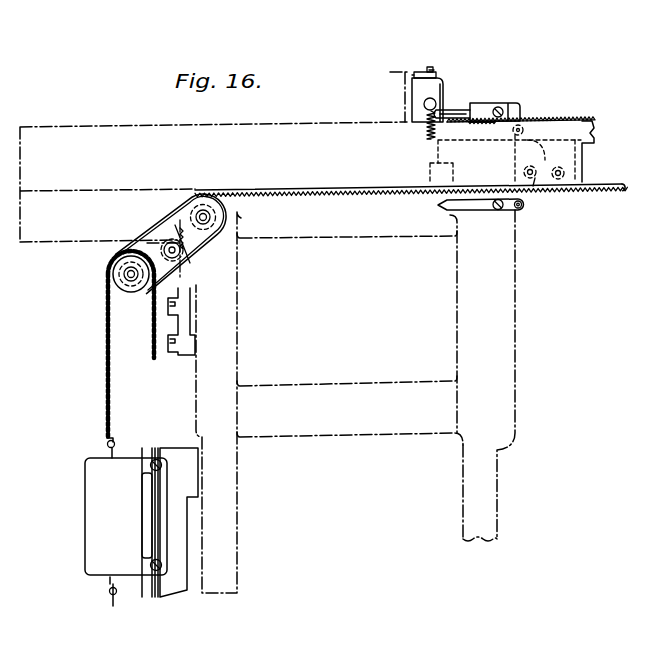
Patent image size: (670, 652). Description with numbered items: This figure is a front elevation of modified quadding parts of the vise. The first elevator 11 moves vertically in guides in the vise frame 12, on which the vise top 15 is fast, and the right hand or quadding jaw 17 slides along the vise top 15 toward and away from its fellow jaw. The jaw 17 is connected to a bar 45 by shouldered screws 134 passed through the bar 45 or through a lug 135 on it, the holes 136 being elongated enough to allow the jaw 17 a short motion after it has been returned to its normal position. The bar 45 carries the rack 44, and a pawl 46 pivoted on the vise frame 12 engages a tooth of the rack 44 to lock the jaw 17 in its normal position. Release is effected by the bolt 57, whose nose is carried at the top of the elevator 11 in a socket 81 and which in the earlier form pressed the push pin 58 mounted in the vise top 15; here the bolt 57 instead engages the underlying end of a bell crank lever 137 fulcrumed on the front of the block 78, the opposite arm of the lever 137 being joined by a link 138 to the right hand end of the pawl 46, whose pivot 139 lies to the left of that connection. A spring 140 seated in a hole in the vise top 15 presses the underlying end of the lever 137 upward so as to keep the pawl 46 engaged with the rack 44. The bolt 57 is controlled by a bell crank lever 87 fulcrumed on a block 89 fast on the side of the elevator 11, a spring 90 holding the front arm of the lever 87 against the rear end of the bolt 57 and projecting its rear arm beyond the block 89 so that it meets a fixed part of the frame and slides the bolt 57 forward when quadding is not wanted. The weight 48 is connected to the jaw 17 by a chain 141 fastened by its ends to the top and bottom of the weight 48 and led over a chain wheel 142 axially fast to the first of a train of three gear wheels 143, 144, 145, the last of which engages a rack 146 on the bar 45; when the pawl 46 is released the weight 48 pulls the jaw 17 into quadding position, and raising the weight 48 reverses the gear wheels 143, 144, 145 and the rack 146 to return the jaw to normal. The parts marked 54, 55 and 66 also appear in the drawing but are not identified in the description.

The first elevator 11 is at (403, 80).
The vise frame 12 is at (338, 379).
The vise top 15 is at (137, 127).
The right hand vise jaw 17 is at (430, 157).
The rack 44 is at (595, 193).
The bar 45 is at (612, 188).
The pawl 46 is at (470, 212).
The weight 48 is at (126, 516).
The screw 54 is at (157, 459).
The bracket plate 55 is at (170, 522).
The bolt 57 is at (432, 100).
The push pin 58 is at (442, 122).
The toothed bar 66 is at (553, 119).
The block 78 is at (515, 106).
The socket 81 is at (432, 67).
The bell crank lever 87 is at (433, 67).
The block 89 is at (413, 73).
The spring 90 is at (428, 71).
The shouldered screws 134 is at (536, 186).
The lug 135 is at (577, 170).
The holes 136 is at (537, 174).
The bell crank lever 137 is at (478, 110).
The link 138 is at (527, 160).
The pivot 139 is at (498, 210).
The spring 140 is at (427, 131).
The chain 141 is at (111, 393).
The chain wheel 142 is at (135, 293).
The gear wheel 143 is at (156, 284).
The gear wheel 144 is at (190, 265).
The gear wheel 145 is at (205, 240).
The rack 146 is at (291, 193).